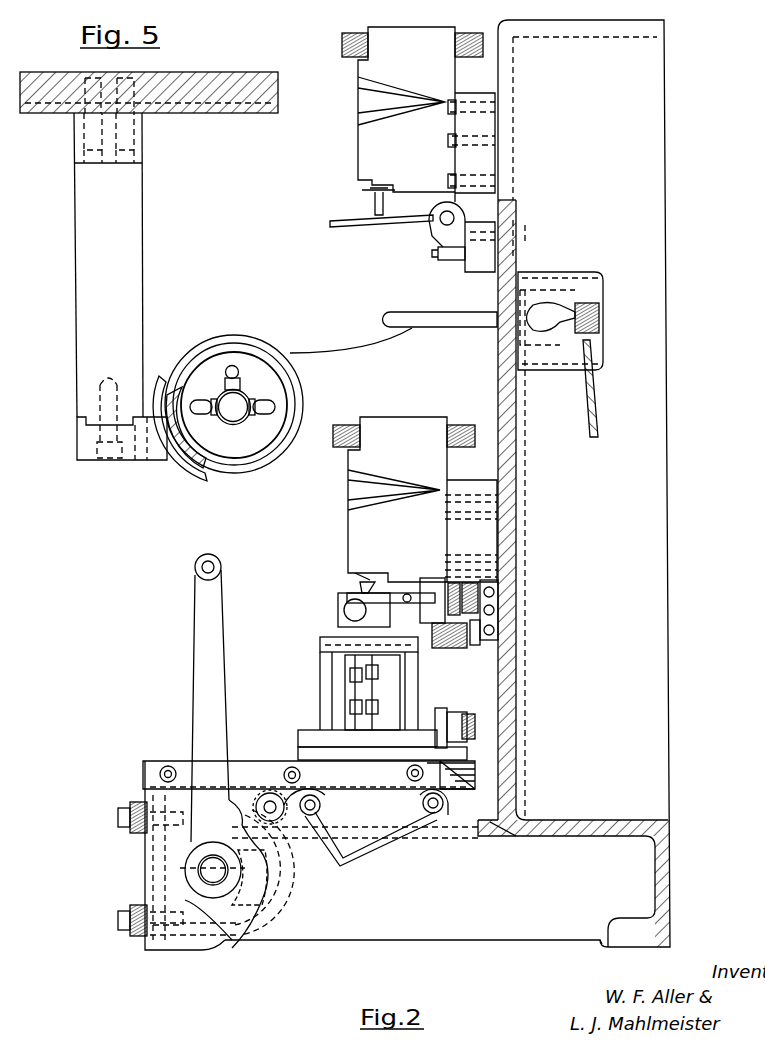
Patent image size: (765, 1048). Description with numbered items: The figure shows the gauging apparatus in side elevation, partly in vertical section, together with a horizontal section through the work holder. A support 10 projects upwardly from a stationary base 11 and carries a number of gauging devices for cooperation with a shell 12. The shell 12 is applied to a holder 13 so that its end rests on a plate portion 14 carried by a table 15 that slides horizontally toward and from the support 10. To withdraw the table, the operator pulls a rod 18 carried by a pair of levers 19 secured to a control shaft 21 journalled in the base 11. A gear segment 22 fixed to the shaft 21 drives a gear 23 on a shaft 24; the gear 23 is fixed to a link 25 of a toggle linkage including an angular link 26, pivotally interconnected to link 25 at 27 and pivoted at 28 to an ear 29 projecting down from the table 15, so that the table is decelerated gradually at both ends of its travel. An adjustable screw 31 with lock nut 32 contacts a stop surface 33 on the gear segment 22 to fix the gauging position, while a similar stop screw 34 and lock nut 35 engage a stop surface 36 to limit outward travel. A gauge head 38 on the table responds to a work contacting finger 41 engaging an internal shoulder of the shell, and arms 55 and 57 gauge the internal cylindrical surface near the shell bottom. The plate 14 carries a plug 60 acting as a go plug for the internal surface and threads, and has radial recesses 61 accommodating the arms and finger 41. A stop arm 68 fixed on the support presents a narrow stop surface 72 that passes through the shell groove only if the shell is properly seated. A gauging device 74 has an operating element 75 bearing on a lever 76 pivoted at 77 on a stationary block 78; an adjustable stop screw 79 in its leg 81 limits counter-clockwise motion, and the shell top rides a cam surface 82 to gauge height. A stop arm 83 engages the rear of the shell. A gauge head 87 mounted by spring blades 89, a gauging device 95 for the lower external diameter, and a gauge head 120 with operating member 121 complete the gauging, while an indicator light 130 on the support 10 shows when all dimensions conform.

In FIG. 5, the support 10 is at (228, 110).
In FIG. 2, the support 10 is at (652, 72).
In FIG. 2, the stationary base 11 is at (665, 928).
In FIG. 5, the shell 12 is at (190, 462).
In FIG. 2, the holder 13 is at (305, 728).
In FIG. 5, the plate portion 14 is at (318, 407).
In FIG. 2, the table 15 is at (300, 752).
In FIG. 2, the rod 18 is at (205, 578).
In FIG. 2, the levers 19 is at (200, 622).
In FIG. 2, the control shaft 21 is at (223, 880).
In FIG. 2, the gear segment 22 is at (262, 868).
In FIG. 2, the gear 23 is at (290, 830).
In FIG. 2, the shaft 24 is at (258, 797).
In FIG. 2, the link 25 is at (318, 815).
In FIG. 2, the angular link 26 is at (438, 813).
In FIG. 2, the pivot connection 27 is at (342, 860).
In FIG. 2, the pivot 28 is at (450, 822).
In FIG. 2, the ear 29 is at (480, 825).
In FIG. 2, the adjustable screw 31 is at (128, 918).
In FIG. 2, the lock nut 32 is at (125, 933).
In FIG. 2, the stop surface 33 is at (223, 882).
In FIG. 2, the stop screw 34 is at (128, 812).
In FIG. 2, the lock nut 35 is at (125, 828).
In FIG. 2, the stop surface 36 is at (238, 812).
In FIG. 2, the gauge head 38 is at (470, 722).
In FIG. 5, the work contacting finger 41 is at (240, 373).
In FIG. 5, the arm 55 is at (252, 418).
In FIG. 5, the second arm 57 is at (226, 385).
In FIG. 5, the plug 60 is at (238, 425).
In FIG. 5, the recesses 61 is at (233, 366).
In FIG. 5, the stop arm 68 is at (126, 238).
In FIG. 5, the stop surface 72 is at (145, 463).
In FIG. 2, the gauging device 74 is at (368, 100).
In FIG. 2, the operating element 75 is at (372, 203).
In FIG. 2, the lever 76 is at (360, 220).
In FIG. 2, the pivot 77 is at (443, 222).
In FIG. 2, the stationary block 78 is at (480, 127).
In FIG. 2, the adjustable stop screw 79 is at (440, 253).
In FIG. 2, the leg 81 is at (495, 205).
In FIG. 2, the cam surface 82 is at (352, 224).
In FIG. 2, the stop arm 83 is at (380, 350).
In FIG. 2, the gauge head 87 is at (428, 580).
In FIG. 2, the spring blades 89 is at (468, 590).
In FIG. 2, the gauging device 95 is at (455, 650).
In FIG. 2, the gauge head 120 is at (348, 492).
In FIG. 2, the operating member 121 is at (360, 583).
In FIG. 2, the indicator light 130 is at (540, 305).